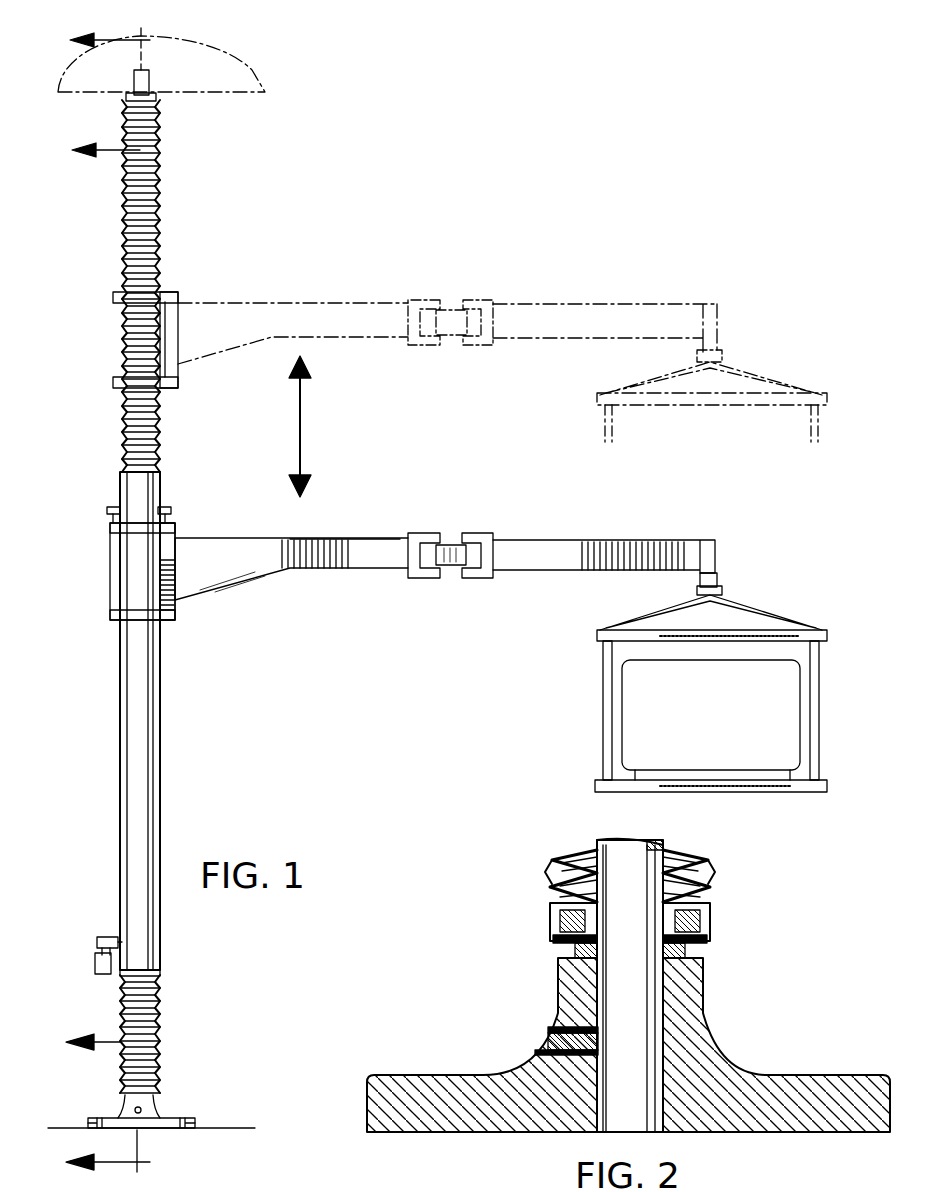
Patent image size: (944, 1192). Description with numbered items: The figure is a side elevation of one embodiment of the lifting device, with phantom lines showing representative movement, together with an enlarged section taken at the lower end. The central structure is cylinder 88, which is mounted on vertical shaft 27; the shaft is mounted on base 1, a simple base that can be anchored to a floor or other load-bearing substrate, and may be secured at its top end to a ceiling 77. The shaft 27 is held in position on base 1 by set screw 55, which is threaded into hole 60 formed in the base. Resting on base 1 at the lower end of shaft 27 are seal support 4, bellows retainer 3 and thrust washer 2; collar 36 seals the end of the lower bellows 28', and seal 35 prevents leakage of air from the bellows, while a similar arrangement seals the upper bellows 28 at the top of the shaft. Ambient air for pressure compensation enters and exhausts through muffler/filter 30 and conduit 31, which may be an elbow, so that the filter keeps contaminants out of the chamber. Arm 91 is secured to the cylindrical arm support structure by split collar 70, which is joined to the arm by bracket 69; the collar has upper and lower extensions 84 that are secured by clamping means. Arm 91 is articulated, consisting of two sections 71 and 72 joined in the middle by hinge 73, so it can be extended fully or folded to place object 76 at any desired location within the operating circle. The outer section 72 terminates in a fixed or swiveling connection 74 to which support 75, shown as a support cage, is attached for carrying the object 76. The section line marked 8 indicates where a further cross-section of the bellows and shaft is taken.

In FIG. 1, the base 1 is at (178, 1118).
In FIG. 2, the base 1 is at (408, 1080).
In FIG. 1, the thrust washer 2 is at (95, 1106).
In FIG. 2, the thrust washer 2 is at (546, 903).
In FIG. 2, the bellows retainer 3 is at (698, 945).
In FIG. 2, the seal support 4 is at (558, 955).
In FIG. 1, the section line 8- 8 is at (97, 97).
In FIG. 1, the vertical shaft 27 is at (150, 80).
In FIG. 2, the vertical shaft 27 is at (648, 1012).
In FIG. 1, the bellows 28 is at (169, 286).
In FIG. 1, the bellows 28' is at (171, 1031).
In FIG. 2, the bellows 28' is at (666, 876).
In FIG. 1, the muffler/filter 30 is at (95, 968).
In FIG. 1, the conduit 31 is at (116, 938).
In FIG. 2, the seal 35 is at (580, 962).
In FIG. 2, the collar 36 is at (560, 885).
In FIG. 2, the set screw 55 is at (584, 1030).
In FIG. 2, the hole 60 is at (540, 1047).
In FIG. 1, the bracket 69 is at (172, 584).
In FIG. 1, the split collar 70 is at (132, 614).
In FIG. 1, the arm section 71 is at (280, 303).
In FIG. 1, the arm section 72 is at (616, 304).
In FIG. 1, the hinge 73 is at (452, 543).
In FIG. 1, the connection 74 is at (718, 579).
In FIG. 1, the support 75 is at (778, 386).
In FIG. 1, the object 76 is at (628, 706).
In FIG. 1, the ceiling 77 is at (236, 94).
In FIG. 1, the extensions 84 is at (112, 528).
In FIG. 1, the cylinder 88 is at (170, 716).
In FIG. 1, the arm 91 is at (371, 533).